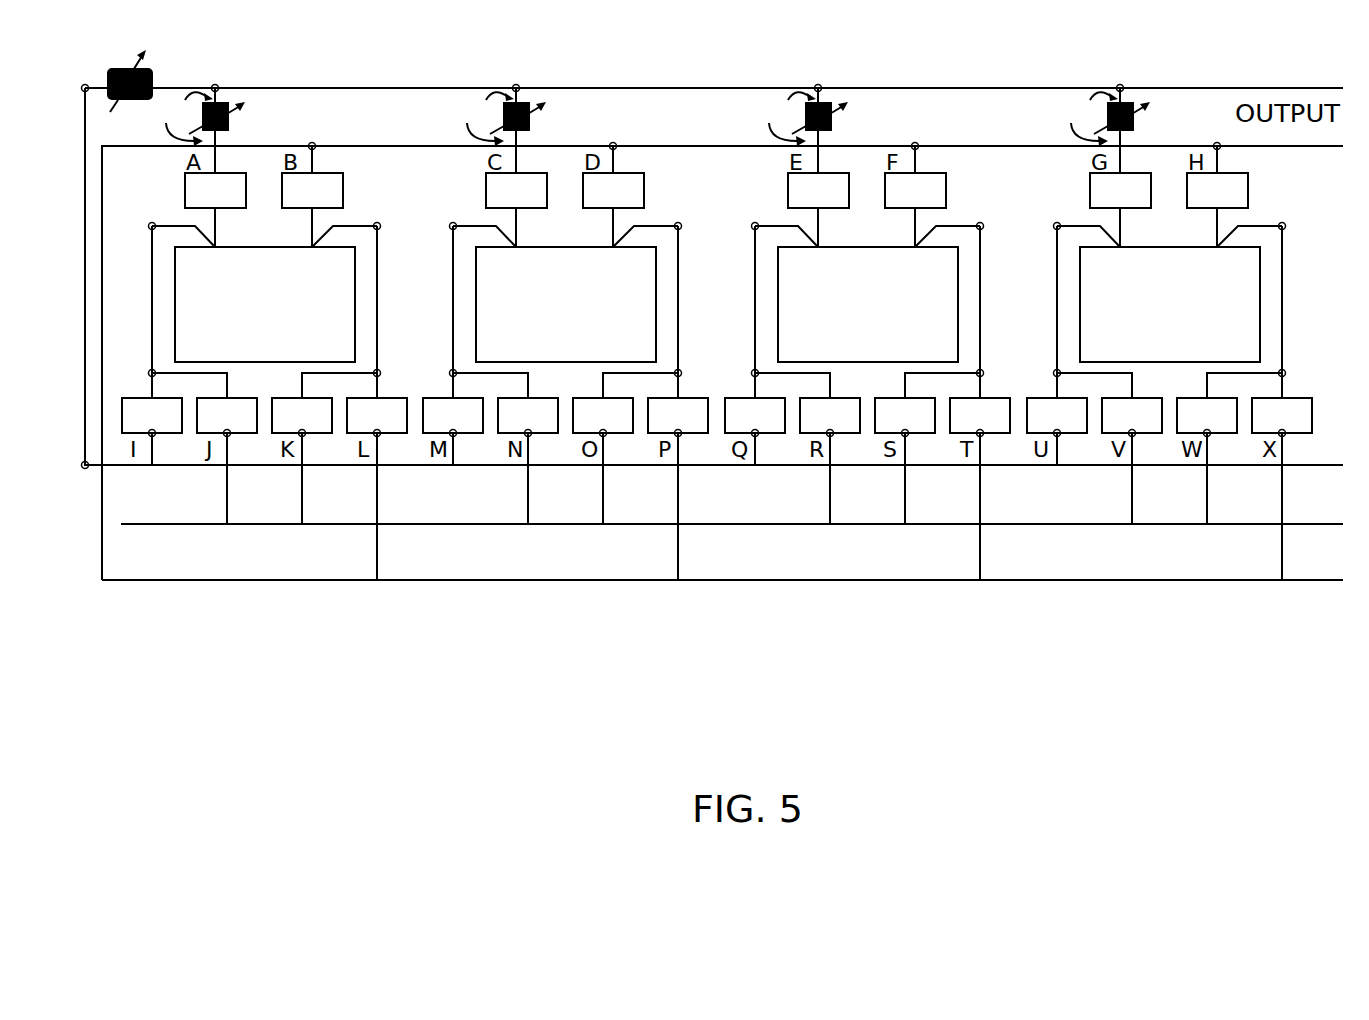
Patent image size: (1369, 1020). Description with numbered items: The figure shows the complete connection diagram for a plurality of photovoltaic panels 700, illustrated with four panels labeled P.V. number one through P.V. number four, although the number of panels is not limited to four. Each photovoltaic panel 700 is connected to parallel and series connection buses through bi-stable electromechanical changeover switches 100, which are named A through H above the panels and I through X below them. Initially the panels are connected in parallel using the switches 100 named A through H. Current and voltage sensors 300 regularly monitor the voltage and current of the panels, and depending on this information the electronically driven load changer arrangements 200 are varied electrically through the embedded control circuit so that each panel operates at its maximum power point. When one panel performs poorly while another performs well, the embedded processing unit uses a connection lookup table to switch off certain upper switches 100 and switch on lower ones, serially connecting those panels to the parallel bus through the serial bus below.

The bi-stable electromechanical changeover switch 100 is at (194, 203).
The electronically driven load changer arrangement 200 is at (645, 95).
The current and voltage sensor 300 is at (589, 95).
The photovoltaic panel 700 is at (244, 336).